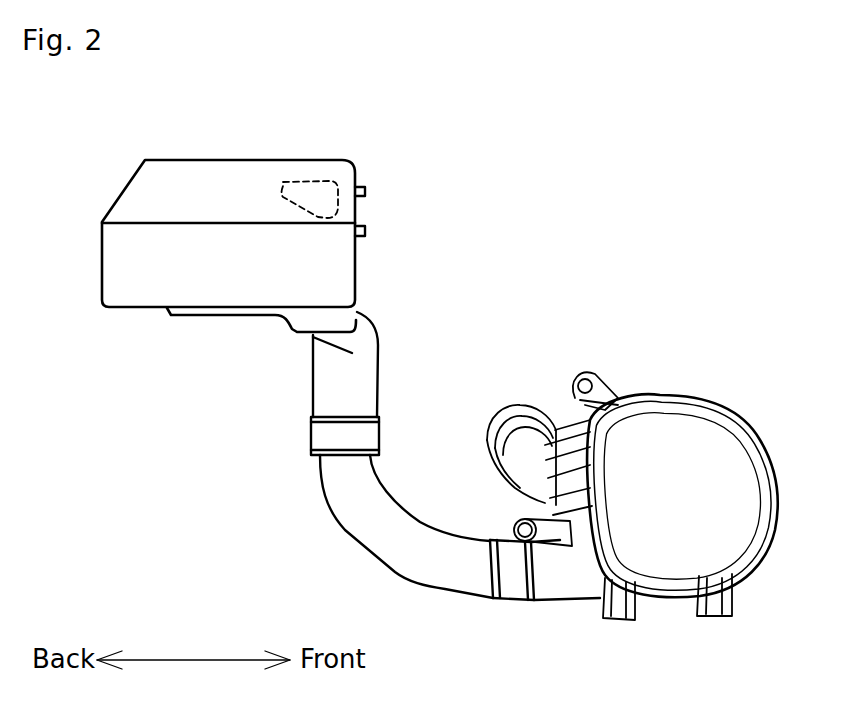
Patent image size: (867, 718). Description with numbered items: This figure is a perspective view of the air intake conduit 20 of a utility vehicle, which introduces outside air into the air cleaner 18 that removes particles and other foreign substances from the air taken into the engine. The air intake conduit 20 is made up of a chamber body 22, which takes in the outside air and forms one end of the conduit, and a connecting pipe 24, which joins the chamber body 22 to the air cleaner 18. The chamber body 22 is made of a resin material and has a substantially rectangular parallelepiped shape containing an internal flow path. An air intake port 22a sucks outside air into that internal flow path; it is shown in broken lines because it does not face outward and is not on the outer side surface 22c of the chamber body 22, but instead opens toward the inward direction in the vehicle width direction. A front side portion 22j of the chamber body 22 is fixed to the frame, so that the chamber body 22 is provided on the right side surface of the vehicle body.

The air cleaner 18 is at (697, 510).
The air intake conduit 20 is at (424, 376).
The chamber body 22 is at (125, 188).
The air intake port 22a is at (315, 187).
The outer side surface 22c is at (249, 272).
The front side portion 22j is at (357, 209).
The connecting pipe 24 is at (352, 512).